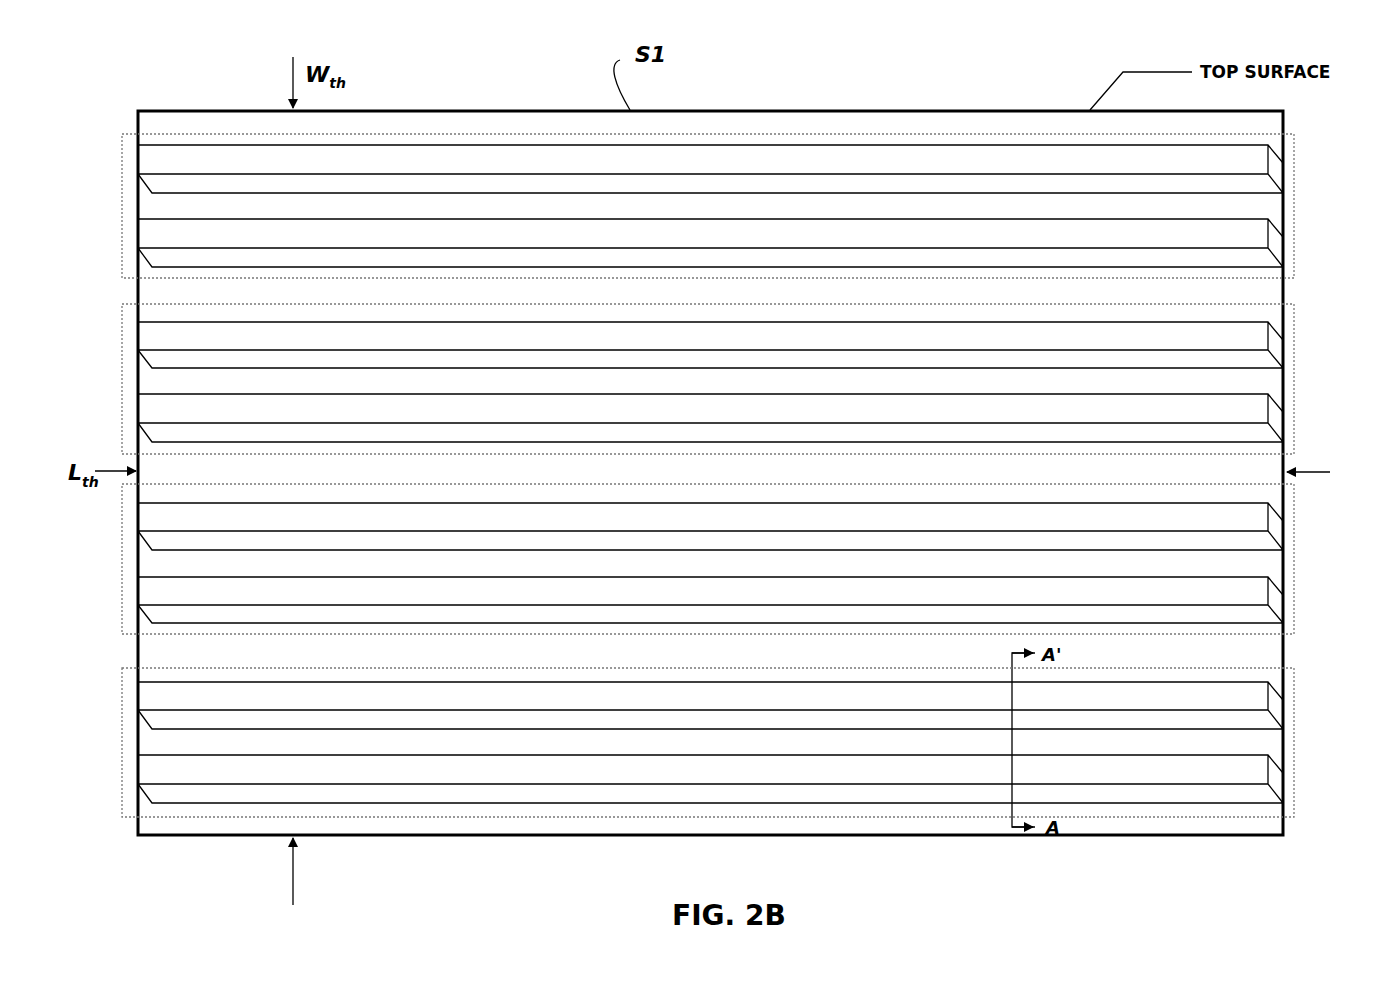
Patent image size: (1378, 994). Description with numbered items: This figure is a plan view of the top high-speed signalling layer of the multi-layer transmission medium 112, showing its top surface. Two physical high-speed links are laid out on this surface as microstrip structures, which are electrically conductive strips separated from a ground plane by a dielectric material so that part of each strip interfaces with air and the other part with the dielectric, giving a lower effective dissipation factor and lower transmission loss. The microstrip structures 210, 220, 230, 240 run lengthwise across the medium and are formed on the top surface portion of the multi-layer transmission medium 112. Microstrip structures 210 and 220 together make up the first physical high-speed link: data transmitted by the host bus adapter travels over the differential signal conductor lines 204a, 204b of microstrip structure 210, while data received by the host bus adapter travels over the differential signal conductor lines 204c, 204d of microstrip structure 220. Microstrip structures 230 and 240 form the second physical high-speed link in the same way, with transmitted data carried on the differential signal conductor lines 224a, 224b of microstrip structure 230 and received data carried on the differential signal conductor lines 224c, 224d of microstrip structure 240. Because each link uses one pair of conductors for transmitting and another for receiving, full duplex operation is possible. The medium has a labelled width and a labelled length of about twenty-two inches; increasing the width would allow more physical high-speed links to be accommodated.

The multi-layer transmission medium 112 is at (146, 84).
The differential signal conductor line 224d is at (775, 160).
The differential signal conductor line 224c is at (775, 233).
The differential signal conductor line 224b is at (880, 328).
The differential signal conductor line 224a is at (880, 406).
The differential signal conductor line 204d is at (1012, 507).
The differential signal conductor line 204c is at (1012, 591).
The differential signal conductor line 204b is at (1185, 703).
The differential signal conductor line 204a is at (1187, 771).
The microstrip structure 240 is at (1296, 205).
The microstrip structure 230 is at (1296, 385).
The microstrip structure 220 is at (1296, 565).
The microstrip structure 210 is at (1296, 735).